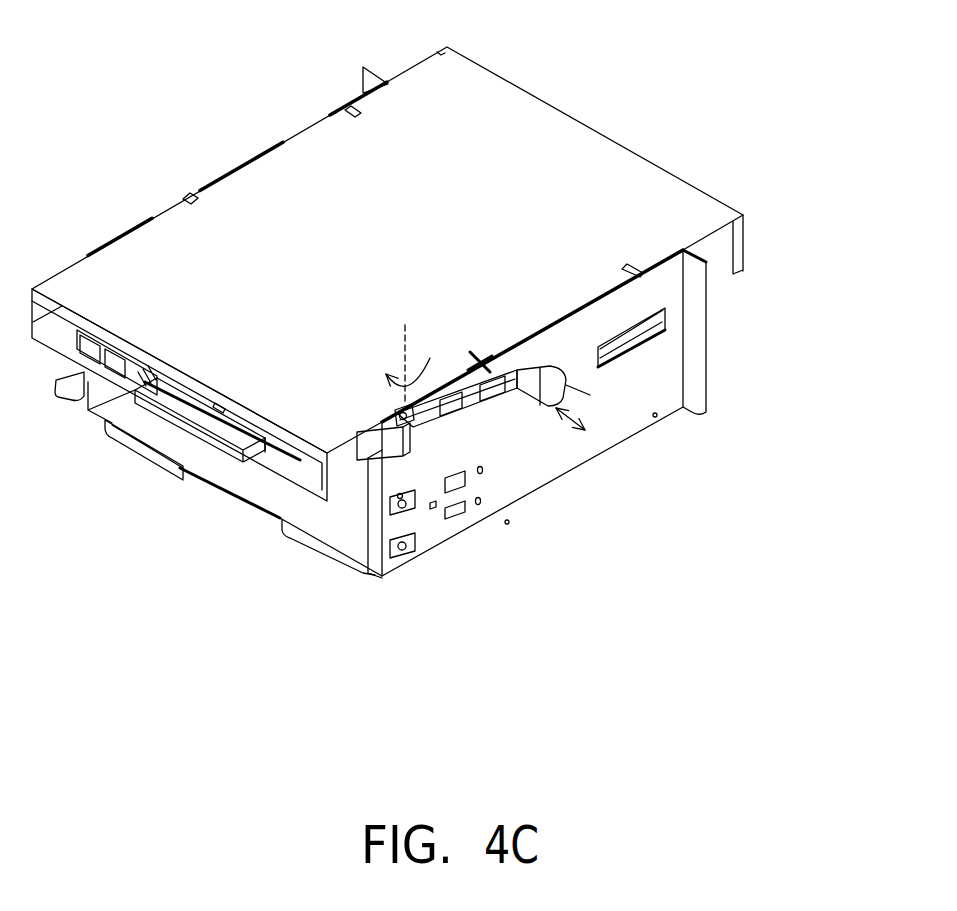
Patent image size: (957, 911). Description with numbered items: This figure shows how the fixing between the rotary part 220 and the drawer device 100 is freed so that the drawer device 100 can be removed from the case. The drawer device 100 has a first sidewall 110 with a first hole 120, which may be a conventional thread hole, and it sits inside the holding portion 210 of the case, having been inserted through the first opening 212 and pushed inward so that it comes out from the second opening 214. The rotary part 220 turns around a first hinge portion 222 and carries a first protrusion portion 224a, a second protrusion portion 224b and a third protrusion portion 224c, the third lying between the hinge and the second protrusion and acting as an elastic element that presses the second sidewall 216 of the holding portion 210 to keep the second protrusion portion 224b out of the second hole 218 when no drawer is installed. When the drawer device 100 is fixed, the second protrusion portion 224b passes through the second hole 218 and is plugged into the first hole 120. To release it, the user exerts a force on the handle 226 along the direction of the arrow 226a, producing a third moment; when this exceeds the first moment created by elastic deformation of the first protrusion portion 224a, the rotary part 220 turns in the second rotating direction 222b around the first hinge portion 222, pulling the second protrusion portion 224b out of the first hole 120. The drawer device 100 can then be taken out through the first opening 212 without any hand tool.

The drawer device 100 is at (608, 170).
The first sidewall 110 is at (713, 231).
The first hole 120 is at (483, 352).
The holding portion 210 is at (665, 387).
The first opening 212 is at (727, 367).
The second opening 214 is at (263, 524).
The second sidewall 216 is at (672, 282).
The second hole 218 is at (500, 361).
The rotary part 220 is at (365, 458).
The first hinge portion 222 is at (418, 430).
The second rotating direction 222b is at (432, 347).
The first protrusion portion 224a is at (413, 439).
The second protrusion portion 224b is at (528, 405).
The third protrusion portion 224c is at (455, 420).
The handle 226 is at (578, 392).
The arrow 226a is at (570, 432).